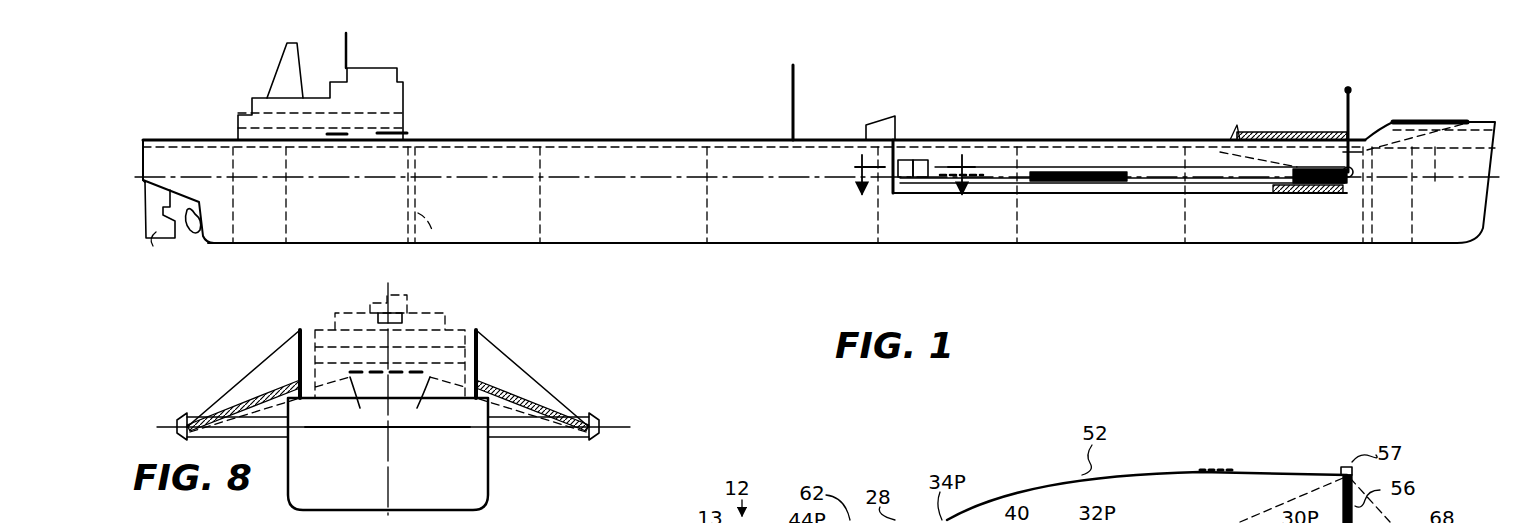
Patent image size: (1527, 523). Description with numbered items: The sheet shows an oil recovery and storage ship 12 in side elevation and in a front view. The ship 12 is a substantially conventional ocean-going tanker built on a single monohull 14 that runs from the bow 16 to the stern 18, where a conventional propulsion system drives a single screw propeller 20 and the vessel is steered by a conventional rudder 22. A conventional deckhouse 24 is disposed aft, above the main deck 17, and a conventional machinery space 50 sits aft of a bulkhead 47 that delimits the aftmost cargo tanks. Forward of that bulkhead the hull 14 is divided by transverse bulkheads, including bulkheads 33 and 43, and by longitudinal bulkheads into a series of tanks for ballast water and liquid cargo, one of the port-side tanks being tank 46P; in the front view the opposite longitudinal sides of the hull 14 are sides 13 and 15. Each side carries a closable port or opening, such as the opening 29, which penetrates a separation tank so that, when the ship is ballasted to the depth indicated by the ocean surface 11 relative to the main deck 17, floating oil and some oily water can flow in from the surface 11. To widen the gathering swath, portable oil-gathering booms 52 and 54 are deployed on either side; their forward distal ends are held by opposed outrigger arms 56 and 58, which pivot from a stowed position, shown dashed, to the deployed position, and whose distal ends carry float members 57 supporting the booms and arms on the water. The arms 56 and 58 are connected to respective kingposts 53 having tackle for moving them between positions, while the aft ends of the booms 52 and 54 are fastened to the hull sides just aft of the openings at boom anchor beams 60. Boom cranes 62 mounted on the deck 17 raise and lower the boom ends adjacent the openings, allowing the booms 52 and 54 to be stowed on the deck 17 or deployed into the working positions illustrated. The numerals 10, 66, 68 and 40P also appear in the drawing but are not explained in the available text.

In FIG. 1, the vessel 10 is at (907, 195).
In FIG. 1, the ocean surface 11 is at (760, 177).
In FIG. 8, the ocean surface 11 is at (617, 427).
In FIG. 1, the ship 12 is at (983, 110).
In FIG. 8, the ship 12 is at (517, 344).
In FIG. 8, the longitudinal side of the hull 13 is at (490, 462).
In FIG. 1, the monohull 14 is at (1265, 245).
In FIG. 8, the longitudinal side of the hull 15 is at (287, 477).
In FIG. 1, the bow 16 is at (1497, 124).
In FIG. 1, the main deck 17 is at (722, 139).
In FIG. 1, the stern 18 is at (143, 150).
In FIG. 1, the screw propeller 20 is at (190, 237).
In FIG. 1, the rudder 22 is at (157, 238).
In FIG. 1, the deckhouse 24 is at (403, 97).
In FIG. 8, the deckhouse 24 is at (413, 305).
In FIG. 1, the closable port or opening 29 is at (920, 140).
In FIG. 1, the transverse bulkhead 33 is at (1008, 245).
In FIG. 1, the transverse bulkhead 43 is at (894, 245).
In FIG. 1, the bulkhead 47 is at (436, 240).
In FIG. 1, the machinery space 50 is at (344, 212).
In FIG. 8, the oil-gathering boom 52 is at (575, 440).
In FIG. 1, the kingpost 53 is at (1347, 92).
In FIG. 1, the oil-gathering boom 54 is at (1144, 194).
In FIG. 8, the oil-gathering boom 54 is at (192, 443).
In FIG. 8, the outrigger arm 56 is at (553, 407).
In FIG. 1, the float member 57 is at (1364, 170).
In FIG. 1, the outrigger arm 58 is at (1358, 142).
In FIG. 8, the outrigger arm 58 is at (238, 382).
In FIG. 1, the boom anchor beam 60 is at (872, 166).
In FIG. 1, the boom crane 62 is at (870, 120).
In FIG. 1, the hatch 66 is at (1290, 122).
In FIG. 1, the anchor line 68 is at (1435, 182).
In FIG. 8, the port boom 40P is at (420, 515).
In FIG. 8, the cargo tank 46P is at (597, 515).